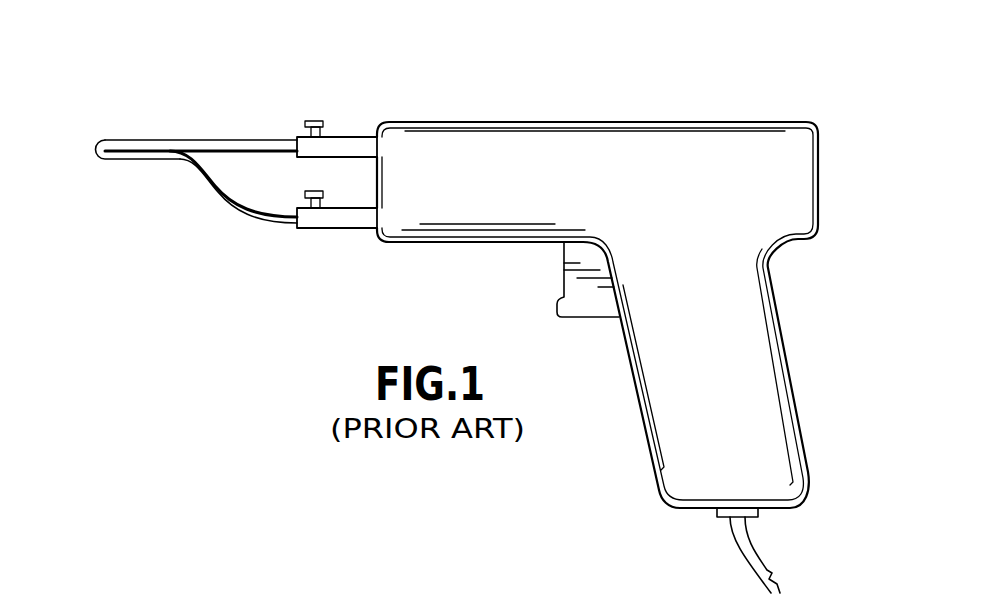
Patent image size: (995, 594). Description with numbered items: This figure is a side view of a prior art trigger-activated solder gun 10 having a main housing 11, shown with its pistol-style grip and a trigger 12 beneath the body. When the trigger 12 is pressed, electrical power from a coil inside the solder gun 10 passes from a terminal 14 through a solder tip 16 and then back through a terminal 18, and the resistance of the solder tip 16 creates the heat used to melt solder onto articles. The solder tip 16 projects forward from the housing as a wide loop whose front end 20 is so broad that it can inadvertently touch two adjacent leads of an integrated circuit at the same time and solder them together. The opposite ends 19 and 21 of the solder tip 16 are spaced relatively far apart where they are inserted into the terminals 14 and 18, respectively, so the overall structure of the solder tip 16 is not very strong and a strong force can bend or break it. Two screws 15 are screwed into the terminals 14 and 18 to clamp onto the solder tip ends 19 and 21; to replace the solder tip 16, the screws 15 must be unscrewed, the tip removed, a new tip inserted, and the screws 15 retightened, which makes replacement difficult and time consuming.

The solder gun 10 is at (665, 101).
The main housing 11 is at (780, 333).
The trigger 12 is at (580, 308).
The terminal 14 is at (358, 137).
The screws 15 is at (316, 120).
The solder tip 16 is at (135, 140).
The terminal 18 is at (333, 228).
The end of solder tip 19 is at (277, 137).
The front end 20 is at (96, 150).
The end of solder tip 21 is at (278, 228).